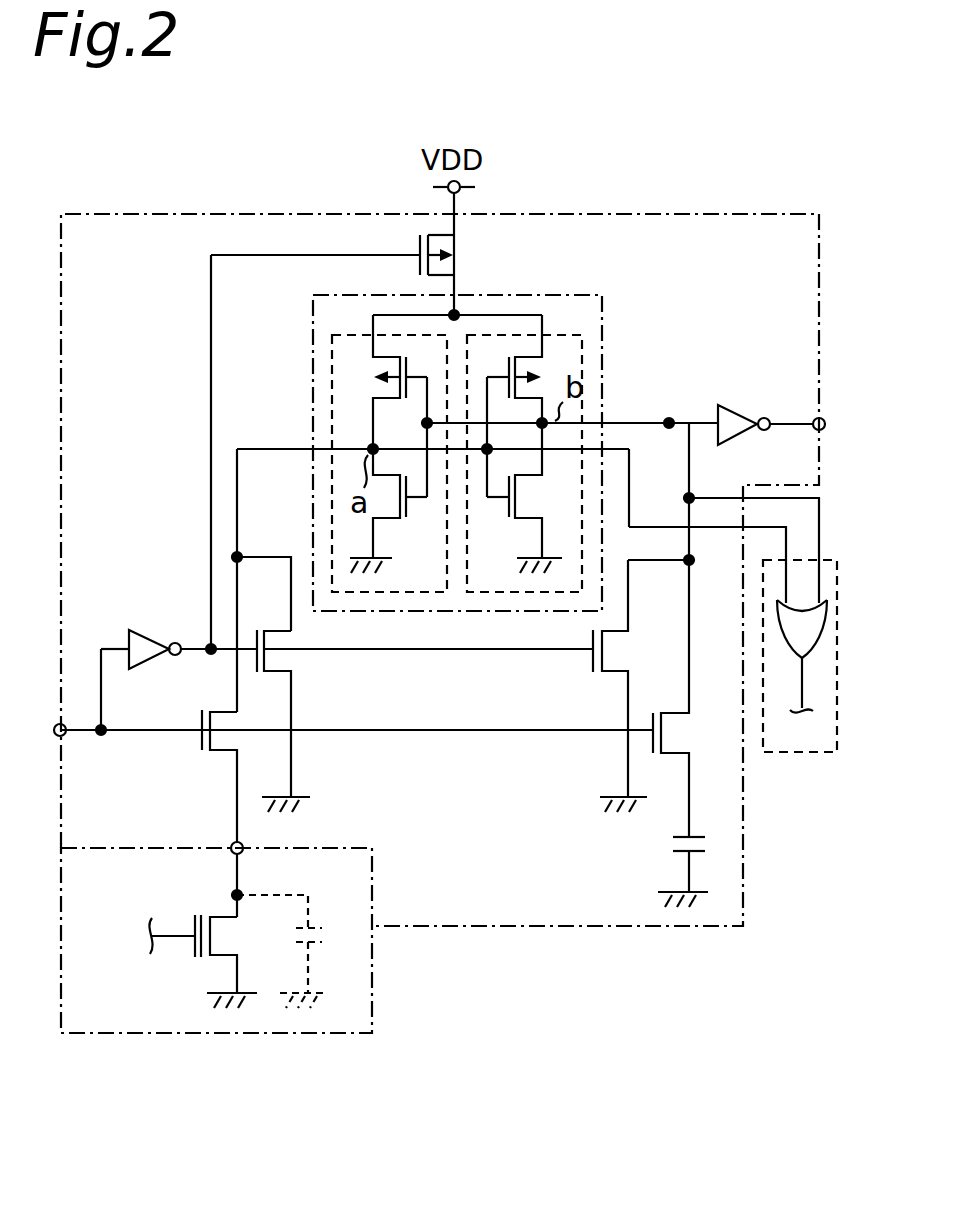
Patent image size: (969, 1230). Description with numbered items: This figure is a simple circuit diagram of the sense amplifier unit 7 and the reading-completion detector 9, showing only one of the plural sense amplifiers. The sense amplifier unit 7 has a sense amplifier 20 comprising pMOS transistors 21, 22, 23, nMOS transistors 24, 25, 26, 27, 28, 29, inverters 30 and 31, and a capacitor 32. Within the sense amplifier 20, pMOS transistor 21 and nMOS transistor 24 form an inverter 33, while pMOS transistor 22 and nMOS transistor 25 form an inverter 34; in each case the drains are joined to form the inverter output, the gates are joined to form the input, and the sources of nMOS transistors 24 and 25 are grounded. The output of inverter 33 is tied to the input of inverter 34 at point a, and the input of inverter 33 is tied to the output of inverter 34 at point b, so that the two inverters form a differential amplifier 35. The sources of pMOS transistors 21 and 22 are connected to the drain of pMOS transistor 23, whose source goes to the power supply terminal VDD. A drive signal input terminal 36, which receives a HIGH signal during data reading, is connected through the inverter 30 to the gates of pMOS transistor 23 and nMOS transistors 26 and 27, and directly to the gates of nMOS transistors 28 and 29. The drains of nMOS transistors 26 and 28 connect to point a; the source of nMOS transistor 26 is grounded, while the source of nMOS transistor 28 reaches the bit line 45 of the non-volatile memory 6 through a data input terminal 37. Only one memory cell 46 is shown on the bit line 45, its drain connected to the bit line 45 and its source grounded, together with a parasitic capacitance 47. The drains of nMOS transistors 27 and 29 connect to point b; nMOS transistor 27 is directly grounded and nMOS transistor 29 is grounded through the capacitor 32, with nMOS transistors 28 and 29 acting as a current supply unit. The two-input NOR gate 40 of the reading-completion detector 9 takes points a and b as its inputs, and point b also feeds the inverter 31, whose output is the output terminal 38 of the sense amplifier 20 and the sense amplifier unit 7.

The non-volatile memory 6 is at (378, 988).
The sense amplifier unit 7 is at (690, 212).
The reading-completion detector 9 is at (803, 760).
The sense amplifier 20 is at (700, 325).
The pMOS transistor 21 is at (368, 356).
The pMOS transistor 22 is at (547, 358).
The pMOS transistor 23 is at (462, 257).
The nMOS transistor 24 is at (418, 514).
The nMOS transistor 25 is at (498, 514).
The nMOS transistor 26 is at (297, 668).
The nMOS transistor 27 is at (590, 668).
The nMOS transistor 28 is at (195, 748).
The nMOS transistor 29 is at (715, 732).
The inverter 30 is at (150, 628).
The inverter 31 is at (745, 440).
The capacitor 32 is at (668, 848).
The inverter 33 is at (324, 371).
The inverter 34 is at (592, 371).
The differential amplifier 35 is at (580, 290).
The drive signal input terminal 36 is at (64, 740).
The data input terminal 37 is at (234, 843).
The output terminal 38 is at (814, 419).
The two-input NOR gate 40 is at (833, 632).
The bit line 45 is at (232, 878).
The memory cell 46 is at (188, 950).
The parasitic capacitance 47 is at (316, 925).